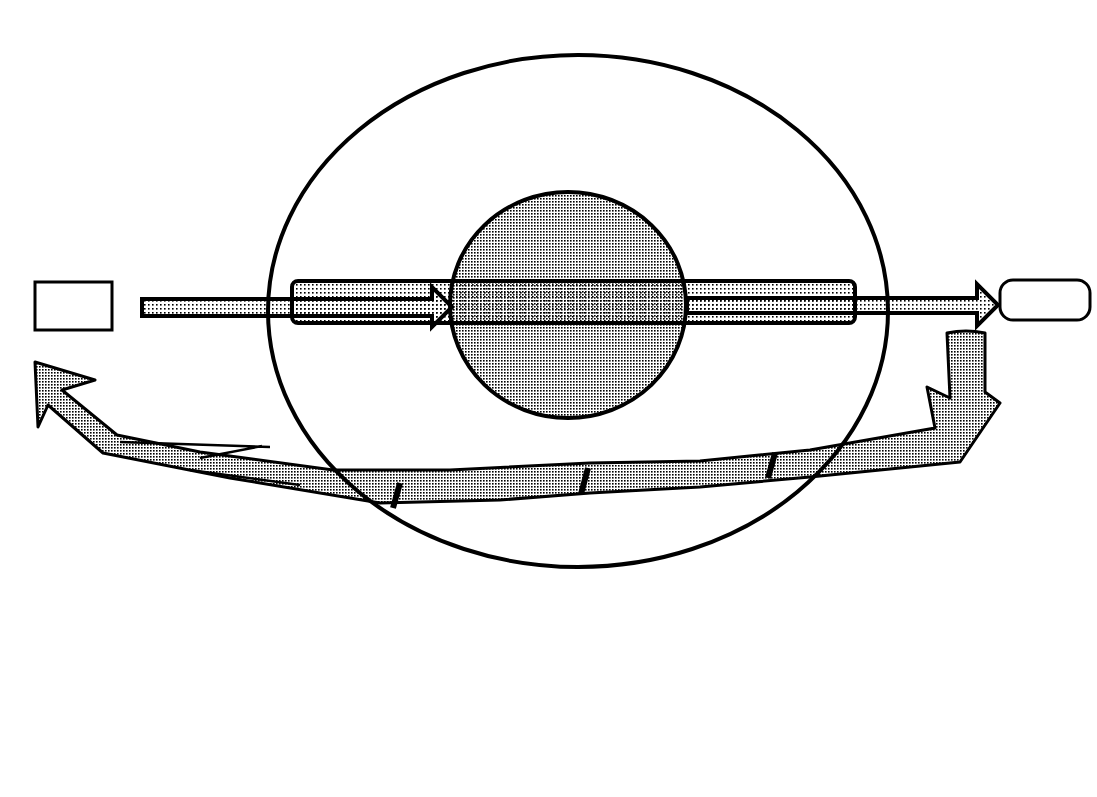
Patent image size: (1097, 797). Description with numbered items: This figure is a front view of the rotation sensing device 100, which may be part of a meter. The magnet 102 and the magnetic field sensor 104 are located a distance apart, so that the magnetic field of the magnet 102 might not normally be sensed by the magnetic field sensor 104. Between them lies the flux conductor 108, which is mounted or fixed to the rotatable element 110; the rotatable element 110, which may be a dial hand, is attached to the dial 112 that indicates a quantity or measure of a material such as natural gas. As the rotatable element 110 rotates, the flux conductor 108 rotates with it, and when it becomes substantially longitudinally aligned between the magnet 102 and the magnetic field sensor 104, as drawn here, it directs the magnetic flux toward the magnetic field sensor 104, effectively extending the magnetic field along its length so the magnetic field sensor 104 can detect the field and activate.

The rotation sensing device 100 is at (880, 120).
The magnet 102 is at (73, 306).
The magnetic field sensor 104 is at (1045, 300).
The flux conductor 108 is at (573, 302).
The rotatable element 110 is at (568, 305).
The dial 112 is at (578, 311).